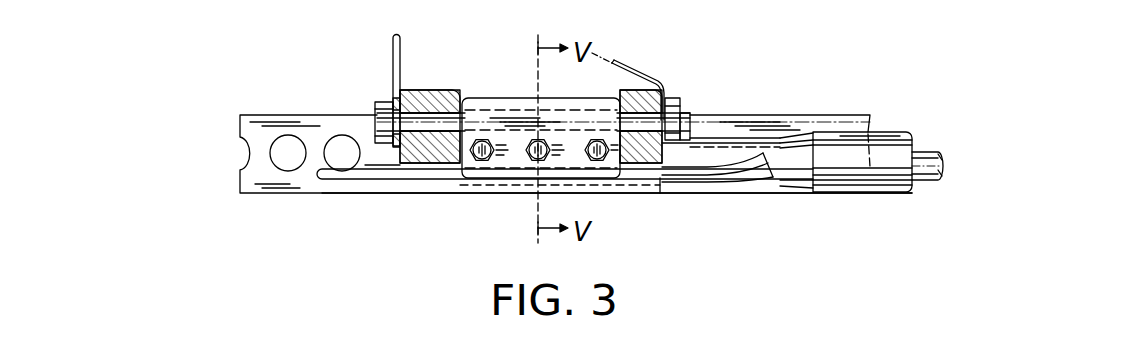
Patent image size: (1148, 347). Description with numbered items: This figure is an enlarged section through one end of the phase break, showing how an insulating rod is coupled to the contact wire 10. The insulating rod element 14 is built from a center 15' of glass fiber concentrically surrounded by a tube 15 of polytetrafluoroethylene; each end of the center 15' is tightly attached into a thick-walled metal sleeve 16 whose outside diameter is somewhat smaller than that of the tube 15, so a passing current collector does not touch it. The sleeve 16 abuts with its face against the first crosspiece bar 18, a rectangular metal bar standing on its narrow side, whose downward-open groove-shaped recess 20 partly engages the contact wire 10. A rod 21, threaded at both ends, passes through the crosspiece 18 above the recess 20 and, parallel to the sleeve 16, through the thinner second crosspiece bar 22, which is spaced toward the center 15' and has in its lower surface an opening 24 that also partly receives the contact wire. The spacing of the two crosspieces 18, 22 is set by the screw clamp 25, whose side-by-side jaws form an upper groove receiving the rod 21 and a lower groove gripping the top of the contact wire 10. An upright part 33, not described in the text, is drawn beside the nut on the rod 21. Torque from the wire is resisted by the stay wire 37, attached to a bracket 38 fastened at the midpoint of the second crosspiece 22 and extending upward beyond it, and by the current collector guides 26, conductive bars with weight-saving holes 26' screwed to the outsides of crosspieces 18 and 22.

The contact wire 10 is at (337, 183).
The insulating rod element 14 is at (878, 130).
The tube 15 is at (862, 200).
The center 15' is at (928, 192).
The sleeve 16 is at (707, 138).
The crosspiece bar 18 is at (447, 92).
The groove-shaped recess 20 is at (413, 193).
The rod 21 is at (418, 115).
The second crosspiece bar 22 is at (660, 158).
The opening 24 is at (630, 190).
The screw clamp 25 is at (518, 162).
The current collector guide 26 is at (576, 138).
The holes 26' is at (315, 127).
The retaining plate 33 is at (393, 54).
The stay wire 37 is at (613, 62).
The bracket 38 is at (659, 86).